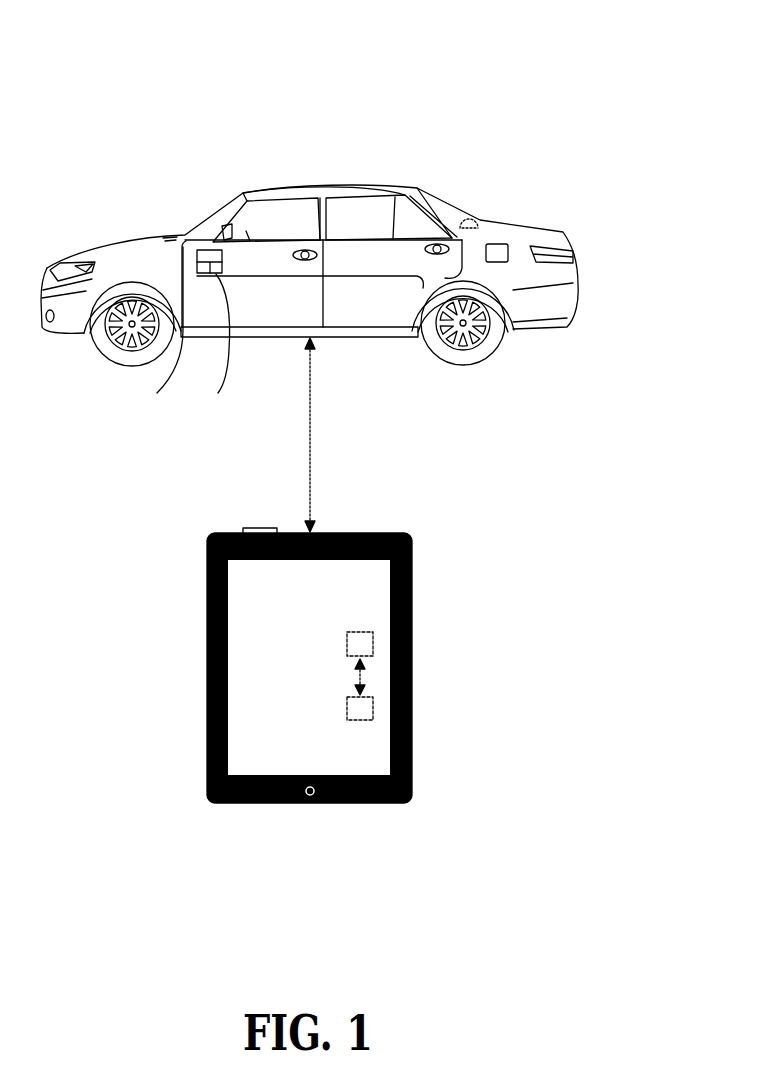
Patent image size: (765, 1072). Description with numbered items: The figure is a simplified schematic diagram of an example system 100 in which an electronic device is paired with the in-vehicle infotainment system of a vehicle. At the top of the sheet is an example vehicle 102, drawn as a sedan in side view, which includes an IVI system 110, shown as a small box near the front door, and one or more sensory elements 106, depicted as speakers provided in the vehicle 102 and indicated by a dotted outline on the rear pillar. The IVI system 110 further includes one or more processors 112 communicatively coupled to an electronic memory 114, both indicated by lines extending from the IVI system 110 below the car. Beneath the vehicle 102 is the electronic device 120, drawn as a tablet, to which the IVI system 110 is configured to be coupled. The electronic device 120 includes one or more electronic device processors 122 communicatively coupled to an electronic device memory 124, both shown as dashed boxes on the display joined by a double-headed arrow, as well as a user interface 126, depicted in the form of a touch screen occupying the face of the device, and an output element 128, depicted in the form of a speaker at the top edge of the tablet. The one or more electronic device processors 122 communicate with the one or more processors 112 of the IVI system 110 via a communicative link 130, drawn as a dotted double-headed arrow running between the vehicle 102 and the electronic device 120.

The system 100 is at (672, 33).
The vehicle 102 is at (513, 216).
The sensory elements 106 is at (471, 216).
The IVI system 110 is at (199, 248).
The processors 112 is at (160, 332).
The electronic memory 114 is at (220, 346).
The electronic device 120 is at (413, 567).
The electronic device processors 122 is at (373, 634).
The electronic device memory 124 is at (373, 698).
The user interface 126 is at (245, 672).
The output element 128 is at (255, 528).
The communicative link 130 is at (312, 470).